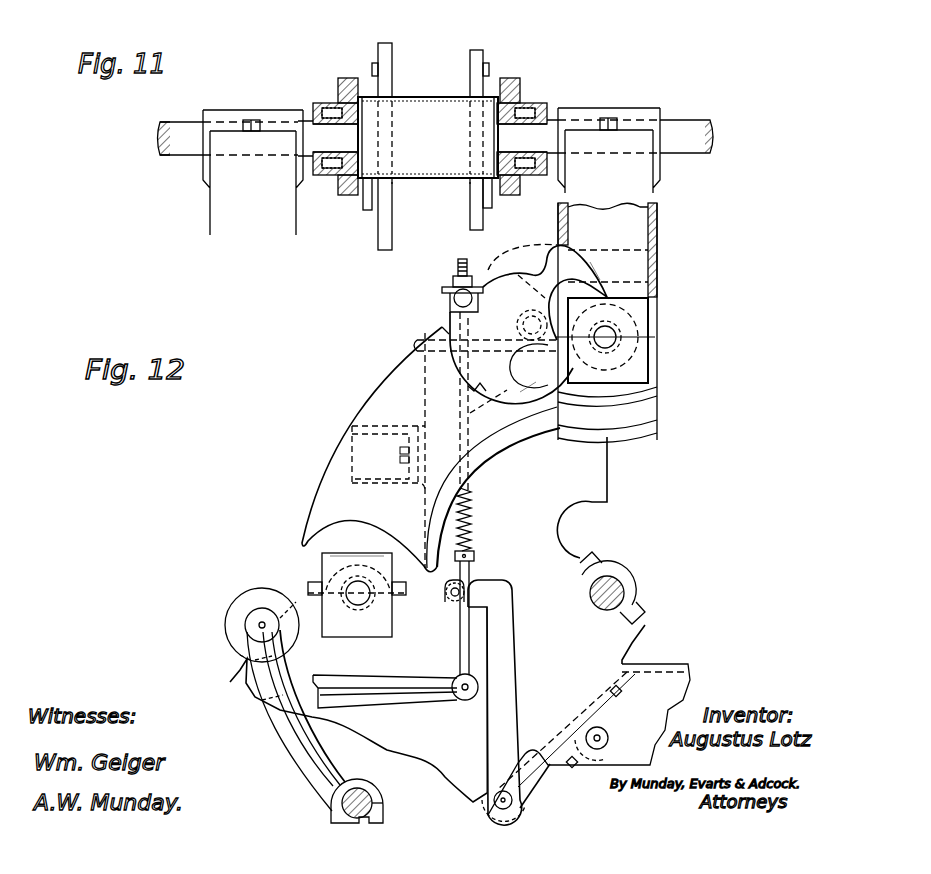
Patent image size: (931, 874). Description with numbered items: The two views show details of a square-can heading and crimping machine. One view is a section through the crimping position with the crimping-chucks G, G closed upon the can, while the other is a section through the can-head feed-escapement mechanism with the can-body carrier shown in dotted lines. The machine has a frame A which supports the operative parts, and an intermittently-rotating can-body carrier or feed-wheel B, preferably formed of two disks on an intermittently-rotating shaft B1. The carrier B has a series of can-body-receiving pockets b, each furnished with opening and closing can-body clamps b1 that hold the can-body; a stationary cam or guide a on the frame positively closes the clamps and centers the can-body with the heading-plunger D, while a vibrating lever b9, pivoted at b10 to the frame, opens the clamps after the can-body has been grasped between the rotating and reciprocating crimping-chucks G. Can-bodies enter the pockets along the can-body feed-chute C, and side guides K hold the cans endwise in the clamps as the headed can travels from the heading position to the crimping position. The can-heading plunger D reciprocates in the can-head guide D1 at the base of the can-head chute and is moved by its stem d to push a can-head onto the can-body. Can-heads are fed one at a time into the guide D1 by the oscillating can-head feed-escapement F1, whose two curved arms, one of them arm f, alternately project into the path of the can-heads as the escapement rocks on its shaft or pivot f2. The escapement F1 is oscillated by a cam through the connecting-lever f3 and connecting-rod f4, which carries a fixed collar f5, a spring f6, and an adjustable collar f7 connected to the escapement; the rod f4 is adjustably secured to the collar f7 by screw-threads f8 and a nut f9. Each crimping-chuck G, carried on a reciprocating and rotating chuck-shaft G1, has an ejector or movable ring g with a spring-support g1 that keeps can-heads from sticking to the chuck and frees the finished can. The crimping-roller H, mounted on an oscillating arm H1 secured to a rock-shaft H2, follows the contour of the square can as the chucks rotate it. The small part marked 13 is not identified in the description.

In FIG. 11, the frame A is at (253, 172).
In FIG. 12, the frame A is at (437, 615).
In FIG. 11, the can-body carrier or feed-wheel B is at (392, 62).
In FIG. 12, the intermittently-rotating shaft B1 is at (627, 591).
In FIG. 12, the can-body feed-chute C is at (690, 662).
In FIG. 12, the can-heading plunger D is at (608, 340).
In FIG. 12, the can-head guide D1 is at (660, 396).
In FIG. 12, the can-head feed-escapement F1 is at (658, 232).
In FIG. 11, the crimping-chuck G is at (350, 78).
In FIG. 12, the crimping-chuck G is at (322, 561).
In FIG. 11, the crimping-chuck shaft G1 is at (188, 150).
In FIG. 12, the crimping-chuck shaft G1 is at (358, 587).
In FIG. 12, the crimping-roller H is at (225, 613).
In FIG. 12, the oscillating arm H1 is at (283, 743).
In FIG. 12, the rock-shaft H2 is at (374, 801).
In FIG. 12, the side guide K is at (392, 398).
In FIG. 12, the stationary cam or guide a is at (660, 430).
In FIG. 11, the can-body-receiving pocket b is at (474, 183).
In FIG. 12, the can-body-receiving pocket b is at (455, 473).
In FIG. 11, the can-body clamp b1 is at (373, 63).
In FIG. 12, the vibrating lever b9 is at (513, 690).
In FIG. 12, the pivot b10 is at (514, 800).
In FIG. 12, the plunger stem d is at (618, 337).
In FIG. 12, the curved arm f is at (600, 280).
In FIG. 12, the shaft or pivot f2 is at (532, 325).
In FIG. 12, the connecting-lever f3 is at (385, 678).
In FIG. 12, the connecting-rod f4 is at (462, 259).
In FIG. 12, the fixed collar f5 is at (475, 553).
In FIG. 12, the spring f6 is at (473, 499).
In FIG. 12, the adjustable collar f7 is at (452, 299).
In FIG. 12, the screw-threads f8 is at (495, 252).
In FIG. 12, the nut f9 is at (452, 281).
In FIG. 11, the ejector or movable ring g is at (343, 192).
In FIG. 12, the ejector or movable ring g is at (372, 556).
In FIG. 11, the spring-support g1 is at (332, 173).
In FIG. 12, the pin 13 is at (450, 596).